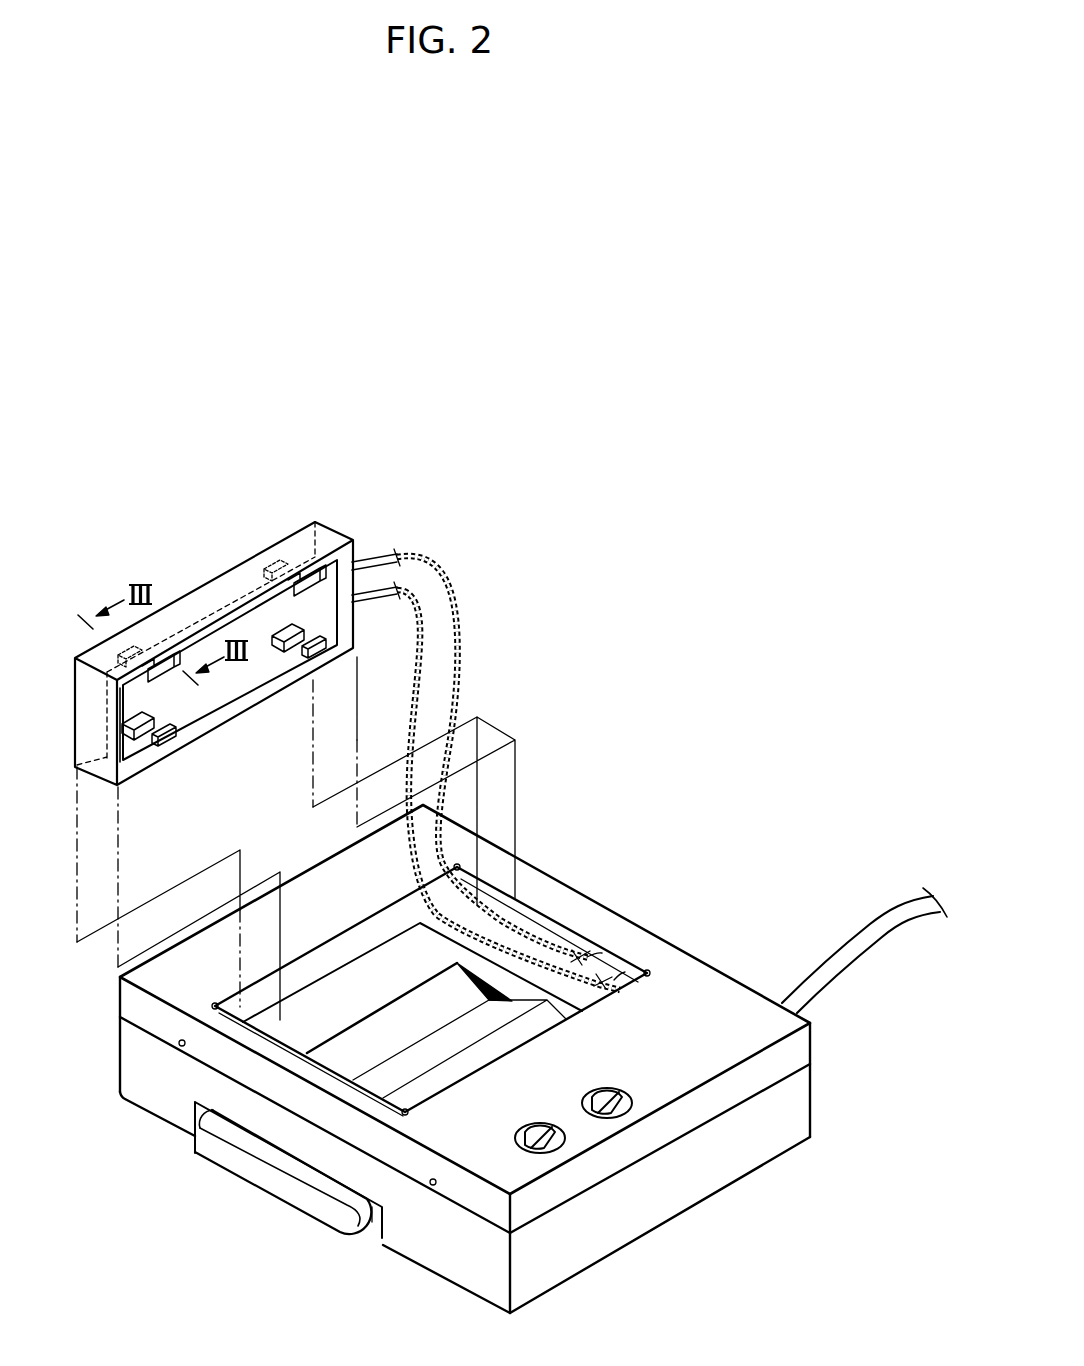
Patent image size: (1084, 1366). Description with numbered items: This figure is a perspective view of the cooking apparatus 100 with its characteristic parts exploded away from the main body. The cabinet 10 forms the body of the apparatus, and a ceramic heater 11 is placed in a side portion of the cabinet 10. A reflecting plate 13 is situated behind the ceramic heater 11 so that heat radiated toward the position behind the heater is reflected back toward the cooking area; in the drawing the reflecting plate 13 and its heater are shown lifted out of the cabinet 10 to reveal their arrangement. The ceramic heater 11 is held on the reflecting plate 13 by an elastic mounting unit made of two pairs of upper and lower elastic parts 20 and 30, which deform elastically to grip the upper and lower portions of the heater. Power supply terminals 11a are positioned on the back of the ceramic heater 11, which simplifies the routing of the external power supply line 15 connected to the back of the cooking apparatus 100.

The cooking apparatus 100 is at (746, 535).
The cabinet 10 is at (812, 1087).
The ceramic heater 11 is at (240, 691).
The power supply terminals 11a is at (399, 560).
The reflecting plate 13 is at (303, 526).
The external power supply line 15 is at (870, 934).
The upper elastic parts 20 is at (172, 682).
The lower elastic parts 30 is at (170, 747).